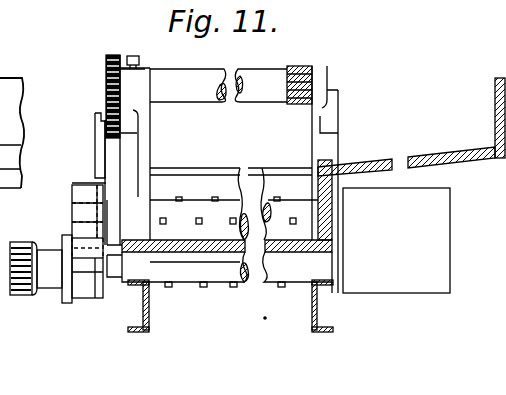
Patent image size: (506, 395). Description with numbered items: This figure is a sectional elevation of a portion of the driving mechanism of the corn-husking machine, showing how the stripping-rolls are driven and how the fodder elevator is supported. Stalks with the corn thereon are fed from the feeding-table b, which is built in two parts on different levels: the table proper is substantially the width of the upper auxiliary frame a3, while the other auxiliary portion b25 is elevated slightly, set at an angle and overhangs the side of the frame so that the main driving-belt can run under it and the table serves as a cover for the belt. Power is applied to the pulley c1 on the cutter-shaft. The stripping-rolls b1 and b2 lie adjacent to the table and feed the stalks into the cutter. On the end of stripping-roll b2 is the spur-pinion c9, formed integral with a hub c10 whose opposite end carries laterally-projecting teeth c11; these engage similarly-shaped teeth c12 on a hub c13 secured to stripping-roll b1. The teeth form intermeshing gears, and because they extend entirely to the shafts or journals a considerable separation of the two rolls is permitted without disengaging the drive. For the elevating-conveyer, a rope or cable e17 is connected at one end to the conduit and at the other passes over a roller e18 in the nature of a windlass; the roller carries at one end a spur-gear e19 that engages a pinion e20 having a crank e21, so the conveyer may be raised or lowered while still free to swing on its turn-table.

The spur-gear e19 is at (105, 61).
The pinion e20 is at (105, 108).
The crank e21 is at (96, 151).
The roller e18 is at (199, 73).
The rope or cable e17 is at (322, 60).
The auxiliary table portion b25 is at (419, 158).
The pulley c1 is at (396, 240).
The stripping-roll b1 is at (207, 198).
The feeding-table b is at (197, 258).
The stripping-roll b2 is at (217, 270).
The upper auxiliary frame a3 is at (143, 300).
The spur-pinion c9 is at (20, 241).
The hub c10 is at (46, 257).
The laterally-projecting teeth c11 is at (85, 299).
The teeth c12 is at (80, 187).
The hub c13 is at (115, 241).